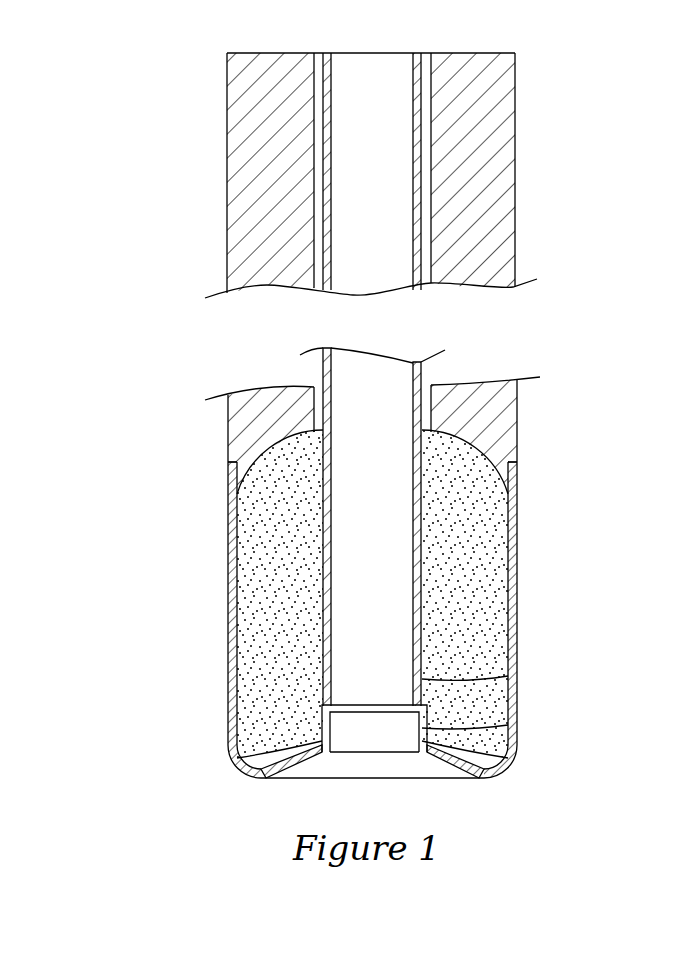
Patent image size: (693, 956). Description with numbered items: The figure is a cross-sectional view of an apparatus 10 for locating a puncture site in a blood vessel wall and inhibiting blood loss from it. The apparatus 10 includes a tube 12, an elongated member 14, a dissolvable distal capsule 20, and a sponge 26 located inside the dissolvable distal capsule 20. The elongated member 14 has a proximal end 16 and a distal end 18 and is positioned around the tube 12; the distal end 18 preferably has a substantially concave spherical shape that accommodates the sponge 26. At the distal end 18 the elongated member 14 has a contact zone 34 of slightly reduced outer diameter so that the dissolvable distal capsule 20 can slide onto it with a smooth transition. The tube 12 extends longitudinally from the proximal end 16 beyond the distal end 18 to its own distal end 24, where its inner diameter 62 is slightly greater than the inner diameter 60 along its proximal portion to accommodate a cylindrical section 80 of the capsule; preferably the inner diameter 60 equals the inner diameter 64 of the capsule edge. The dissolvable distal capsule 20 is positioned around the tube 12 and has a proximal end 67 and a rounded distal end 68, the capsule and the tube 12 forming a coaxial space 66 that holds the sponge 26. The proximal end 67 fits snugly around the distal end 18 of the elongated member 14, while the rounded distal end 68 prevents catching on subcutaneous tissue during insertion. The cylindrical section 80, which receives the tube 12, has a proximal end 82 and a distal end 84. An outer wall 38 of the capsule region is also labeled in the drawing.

The apparatus 10 is at (125, 159).
The tube 12 is at (413, 85).
The elongated member 14 is at (500, 183).
The proximal end 16 is at (515, 52).
The distal end 18 is at (507, 488).
The dissolvable distal capsule 20 is at (228, 570).
The distal end 24 is at (240, 758).
The sponge 26 is at (490, 566).
The contact zone 34 is at (222, 477).
The outer wall 38 is at (232, 660).
The inner diameter 60 is at (515, 678).
The inner diameter 62 is at (513, 727).
The inner diameter 64 is at (415, 740).
The coaxial space 66 is at (495, 642).
The proximal end 67 is at (518, 462).
The distal end 68 is at (485, 775).
The cylindrical section 80 is at (358, 758).
The proximal end 82 is at (400, 706).
The distal end 84 is at (340, 752).